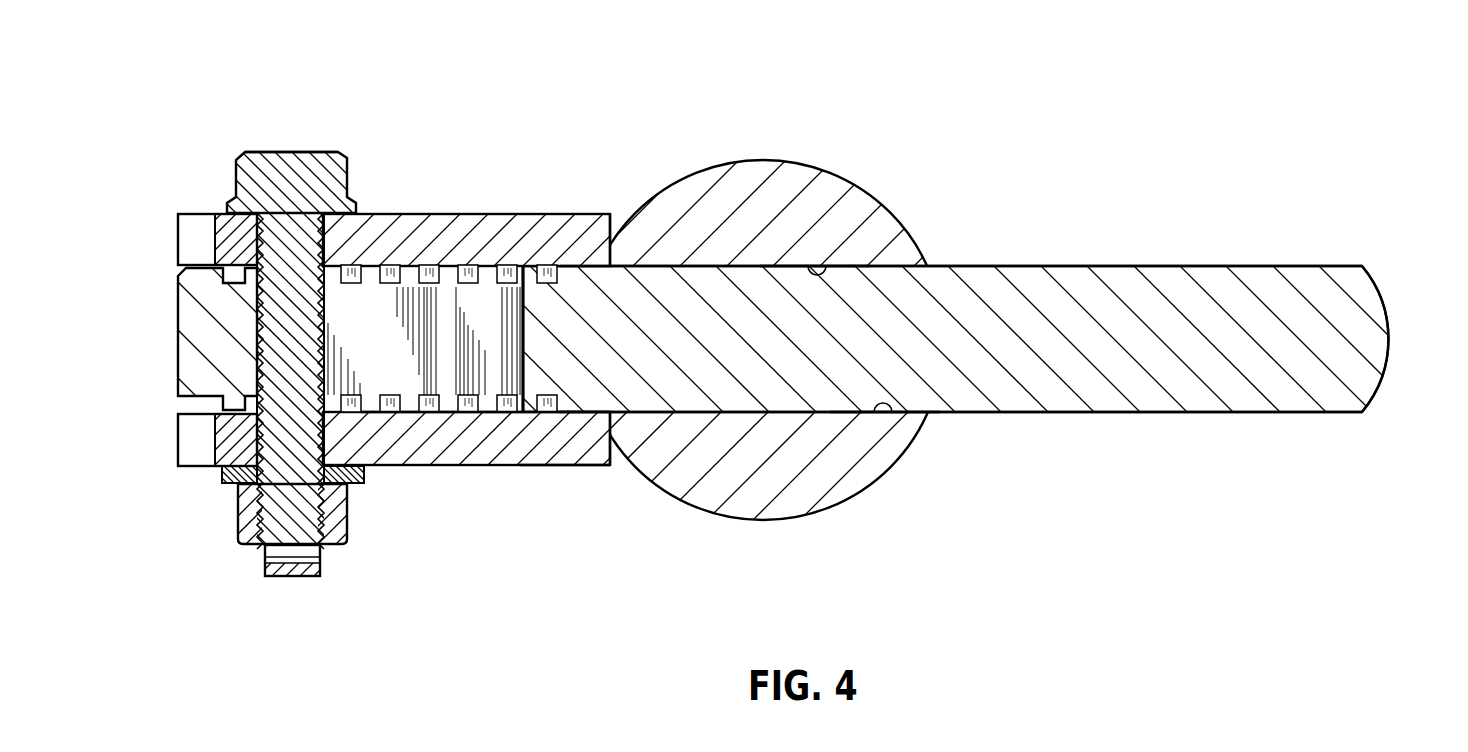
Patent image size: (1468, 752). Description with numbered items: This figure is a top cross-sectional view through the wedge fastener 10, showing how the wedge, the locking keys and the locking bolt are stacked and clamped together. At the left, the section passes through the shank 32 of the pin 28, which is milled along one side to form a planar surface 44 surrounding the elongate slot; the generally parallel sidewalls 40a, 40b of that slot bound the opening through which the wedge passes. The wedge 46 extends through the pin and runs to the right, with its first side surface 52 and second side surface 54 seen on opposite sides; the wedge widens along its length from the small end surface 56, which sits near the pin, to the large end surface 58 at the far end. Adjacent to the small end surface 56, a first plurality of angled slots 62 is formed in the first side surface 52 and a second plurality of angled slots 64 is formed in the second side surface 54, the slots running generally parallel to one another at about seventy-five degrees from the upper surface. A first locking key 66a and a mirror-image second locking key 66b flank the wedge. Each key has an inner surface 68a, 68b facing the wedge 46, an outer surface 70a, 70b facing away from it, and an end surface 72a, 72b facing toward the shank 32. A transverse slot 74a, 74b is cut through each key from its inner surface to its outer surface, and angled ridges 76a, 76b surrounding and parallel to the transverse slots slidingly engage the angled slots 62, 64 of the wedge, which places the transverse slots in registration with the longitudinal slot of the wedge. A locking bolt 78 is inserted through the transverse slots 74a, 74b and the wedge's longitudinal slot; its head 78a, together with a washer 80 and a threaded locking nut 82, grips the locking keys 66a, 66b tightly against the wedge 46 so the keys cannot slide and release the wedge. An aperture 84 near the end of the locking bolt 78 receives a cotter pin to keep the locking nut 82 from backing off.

The wedge fastener 10 is at (220, 72).
The pin 28 is at (868, 192).
The shank 32 is at (748, 170).
The sidewall 40a is at (818, 270).
The sidewall 40b is at (883, 407).
The planar surface 44 is at (558, 420).
The wedge 46 is at (1250, 266).
The first side surface 52 is at (1120, 413).
The second side surface 54 is at (1083, 268).
The small end surface 56 is at (178, 345).
The large end surface 58 is at (1388, 346).
The first plurality of angled slots 62 is at (455, 410).
The second plurality of angled slots 64 is at (465, 278).
The first locking key 66a is at (178, 430).
The second locking key 66b is at (178, 238).
The inner surface 68a is at (568, 400).
The inner surface 68b is at (580, 275).
The outer surface 70a is at (432, 440).
The outer surface 70b is at (432, 237).
The end surface 72a is at (612, 470).
The end surface 72b is at (612, 240).
The transverse slot 74a is at (243, 413).
The transverse slot 74b is at (247, 216).
The angled ridges 76a is at (352, 400).
The angled ridges 76b is at (352, 275).
The locking bolt 78 is at (350, 152).
The head 78a is at (298, 152).
The washer 80 is at (222, 474).
The threaded locking nut 82 is at (238, 518).
The aperture 84 is at (265, 560).